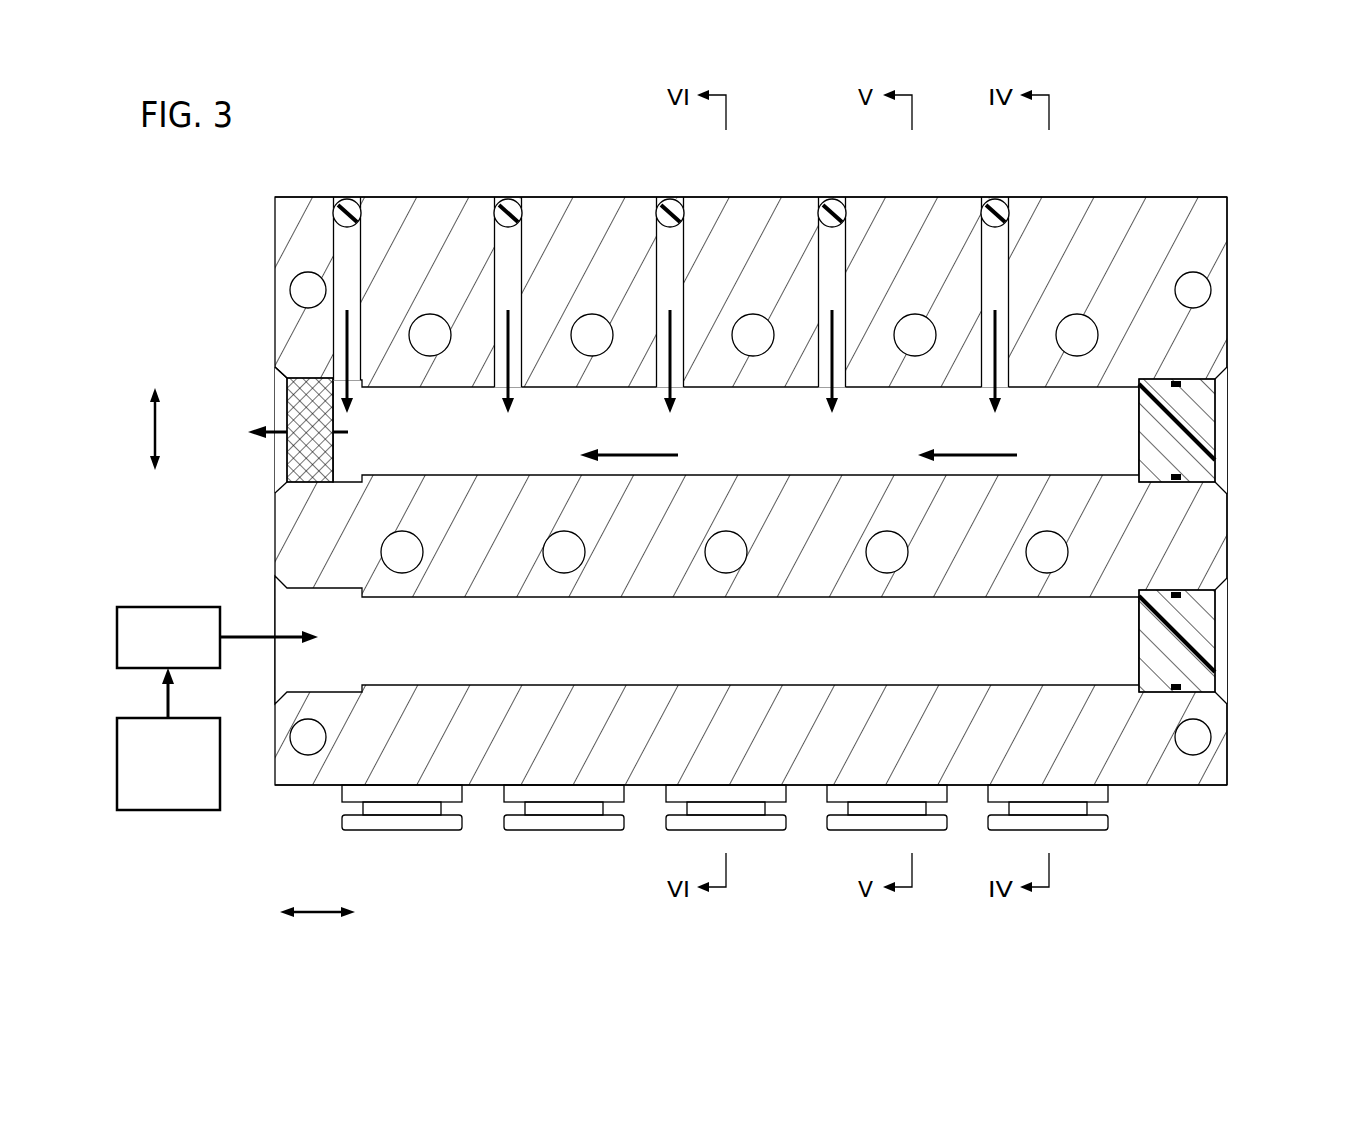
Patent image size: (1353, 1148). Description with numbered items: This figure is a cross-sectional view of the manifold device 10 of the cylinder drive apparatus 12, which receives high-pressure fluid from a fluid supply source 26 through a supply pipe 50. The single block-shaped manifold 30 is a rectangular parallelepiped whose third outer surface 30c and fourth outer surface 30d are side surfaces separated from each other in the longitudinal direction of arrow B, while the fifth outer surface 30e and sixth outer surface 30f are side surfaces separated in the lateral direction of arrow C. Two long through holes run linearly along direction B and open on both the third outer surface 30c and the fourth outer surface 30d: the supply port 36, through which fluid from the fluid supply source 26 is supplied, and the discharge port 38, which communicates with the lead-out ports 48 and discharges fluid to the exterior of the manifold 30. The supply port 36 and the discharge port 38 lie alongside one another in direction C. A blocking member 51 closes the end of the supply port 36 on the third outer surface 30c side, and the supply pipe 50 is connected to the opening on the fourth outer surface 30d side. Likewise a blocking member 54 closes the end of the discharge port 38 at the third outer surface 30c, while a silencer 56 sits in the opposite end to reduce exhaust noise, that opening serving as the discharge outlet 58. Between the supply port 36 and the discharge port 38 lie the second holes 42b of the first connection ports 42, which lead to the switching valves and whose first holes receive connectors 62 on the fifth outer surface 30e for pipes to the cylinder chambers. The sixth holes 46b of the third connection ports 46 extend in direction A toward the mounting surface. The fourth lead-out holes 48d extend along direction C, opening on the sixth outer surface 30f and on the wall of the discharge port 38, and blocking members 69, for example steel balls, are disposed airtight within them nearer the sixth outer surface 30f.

The manifold device 10 is at (265, 210).
The cylinder drive apparatus 12 is at (443, 129).
The fluid supply source 26 is at (180, 810).
The manifold 30 is at (1217, 216).
The third outer surface 30c is at (1227, 324).
The fourth outer surface 30d is at (275, 300).
The fifth outer surface 30e is at (1175, 787).
The sixth outer surface 30f is at (312, 197).
The supply port 36 is at (943, 662).
The discharge port 38 is at (847, 440).
The first connection ports 42 is at (743, 590).
The second holes 42b is at (402, 560).
The third connection ports 46 is at (758, 376).
The sixth holes 46b is at (432, 341).
The lead-out ports 48 is at (718, 282).
The fourth lead-out holes 48d is at (350, 247).
The supply pipe 50 is at (165, 607).
The blocking member 51 is at (1190, 652).
The blocking member 54 is at (1190, 436).
The silencer 56 is at (290, 470).
The discharge outlet 58 is at (275, 382).
The connectors 62 is at (505, 822).
The blocking members 69 is at (347, 205).
The longitudinal direction B is at (317, 901).
The lateral direction C is at (147, 429).